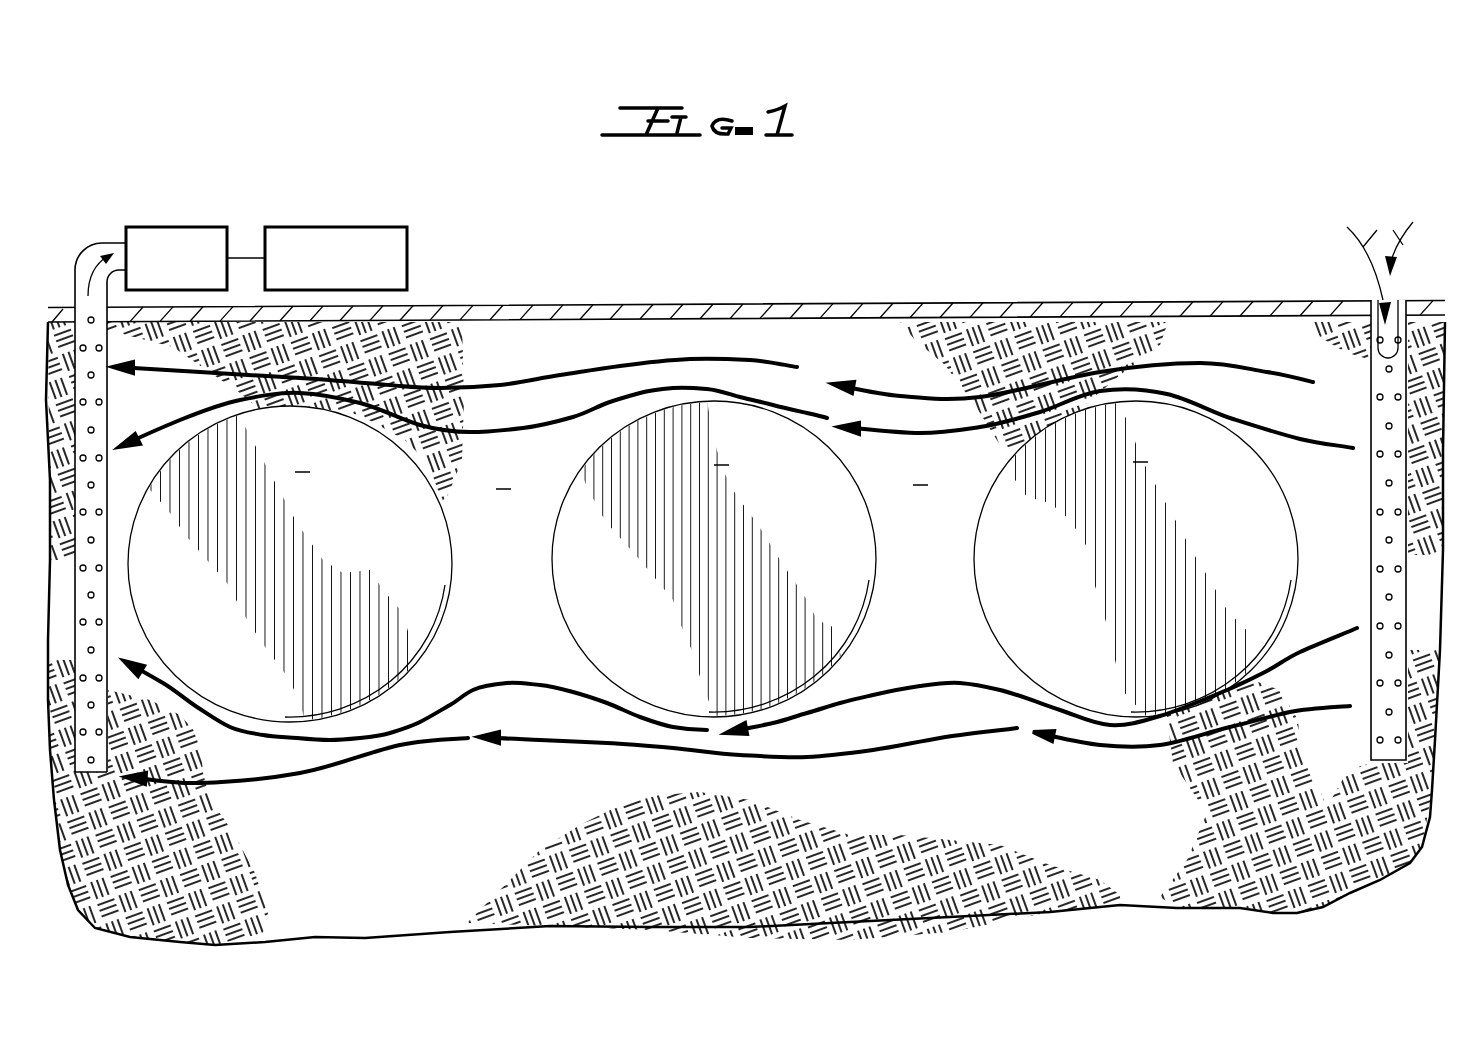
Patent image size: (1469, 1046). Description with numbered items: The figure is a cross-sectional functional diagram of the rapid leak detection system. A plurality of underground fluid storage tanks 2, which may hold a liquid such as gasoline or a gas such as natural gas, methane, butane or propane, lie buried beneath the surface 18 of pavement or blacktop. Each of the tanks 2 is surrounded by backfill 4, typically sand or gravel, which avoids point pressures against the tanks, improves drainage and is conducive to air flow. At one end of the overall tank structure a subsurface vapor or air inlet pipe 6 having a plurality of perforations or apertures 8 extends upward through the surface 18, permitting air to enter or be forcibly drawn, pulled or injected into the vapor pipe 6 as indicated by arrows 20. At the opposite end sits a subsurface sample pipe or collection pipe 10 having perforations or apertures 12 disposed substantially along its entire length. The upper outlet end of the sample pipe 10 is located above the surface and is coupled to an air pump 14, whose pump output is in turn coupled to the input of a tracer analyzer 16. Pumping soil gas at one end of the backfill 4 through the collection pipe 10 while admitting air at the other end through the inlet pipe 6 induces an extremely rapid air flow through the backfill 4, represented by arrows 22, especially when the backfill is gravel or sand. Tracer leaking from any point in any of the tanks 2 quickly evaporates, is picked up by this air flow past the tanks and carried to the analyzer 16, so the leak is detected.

The underground fluid storage tanks 2 is at (713, 560).
The backfill 4 is at (745, 633).
The vapor or air inlet pipe 6 is at (1378, 368).
The perforations or apertures 8 is at (1382, 740).
The sample pipe or collection pipe 10 is at (107, 388).
The perforations or apertures 12 is at (101, 465).
The air pump 14 is at (200, 227).
The tracer analyzer 16 is at (370, 227).
The surface 18 is at (977, 312).
The arrows 20 is at (1380, 282).
The arrows 22 is at (508, 430).